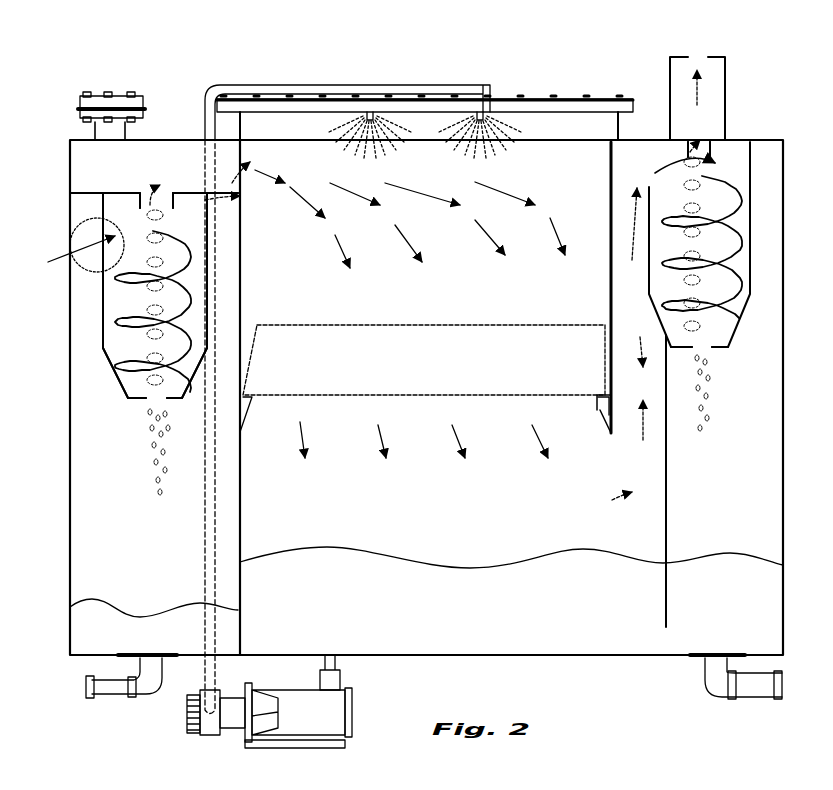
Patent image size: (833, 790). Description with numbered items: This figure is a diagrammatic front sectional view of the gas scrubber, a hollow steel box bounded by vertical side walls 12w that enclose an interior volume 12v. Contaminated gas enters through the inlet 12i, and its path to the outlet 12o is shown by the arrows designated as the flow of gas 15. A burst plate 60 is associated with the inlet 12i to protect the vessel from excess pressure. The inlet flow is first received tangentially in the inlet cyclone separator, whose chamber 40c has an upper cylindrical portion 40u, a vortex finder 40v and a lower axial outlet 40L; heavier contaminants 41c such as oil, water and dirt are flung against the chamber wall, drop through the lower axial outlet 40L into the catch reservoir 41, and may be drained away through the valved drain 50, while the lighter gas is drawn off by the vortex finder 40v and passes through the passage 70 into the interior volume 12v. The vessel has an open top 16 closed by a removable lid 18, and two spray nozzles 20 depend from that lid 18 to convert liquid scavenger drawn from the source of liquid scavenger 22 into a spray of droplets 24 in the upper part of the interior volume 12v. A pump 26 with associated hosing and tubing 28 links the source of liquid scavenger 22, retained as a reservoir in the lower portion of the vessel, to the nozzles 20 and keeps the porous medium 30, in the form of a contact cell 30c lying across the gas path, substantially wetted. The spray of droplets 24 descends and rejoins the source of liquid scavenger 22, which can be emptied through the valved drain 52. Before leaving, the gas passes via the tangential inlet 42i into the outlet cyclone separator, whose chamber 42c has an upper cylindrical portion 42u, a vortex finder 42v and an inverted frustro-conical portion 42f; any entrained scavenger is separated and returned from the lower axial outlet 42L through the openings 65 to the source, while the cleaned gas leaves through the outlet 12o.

The vertical side walls 12w is at (68, 489).
The interior volume 12v is at (461, 384).
The inlet 12i is at (95, 218).
The outlet 12o is at (682, 48).
The flow of gas 15 is at (398, 285).
The open top 16 is at (425, 100).
The removable lid 18 is at (535, 92).
The spray nozzle 20 is at (400, 100).
The source of liquid scavenger 22 is at (722, 420).
The spray of droplets 24 is at (455, 163).
The pump 26 is at (362, 703).
The hosing and tubing 28 is at (278, 80).
The porous medium 30 is at (424, 378).
The contact cell 30c is at (424, 378).
The chamber 40c is at (125, 207).
The upper cylindrical portion 40u is at (144, 186).
The vortex finder 40v is at (175, 203).
The lower axial outlet 40L is at (140, 403).
The catch reservoir 41 is at (154, 620).
The contaminants 41c is at (138, 450).
The chamber 42c is at (748, 150).
The upper cylindrical portion 42u is at (712, 152).
The vortex finder 42v is at (718, 152).
The tangential inlet 42i is at (646, 150).
The inverted frustro-conical portion 42f is at (118, 368).
The lower axial outlet 42L is at (712, 351).
The valved drain 50 is at (82, 667).
The valved drain 52 is at (708, 699).
The burst plate 60 is at (93, 80).
The openings 65 is at (660, 645).
The passage 70 is at (195, 152).